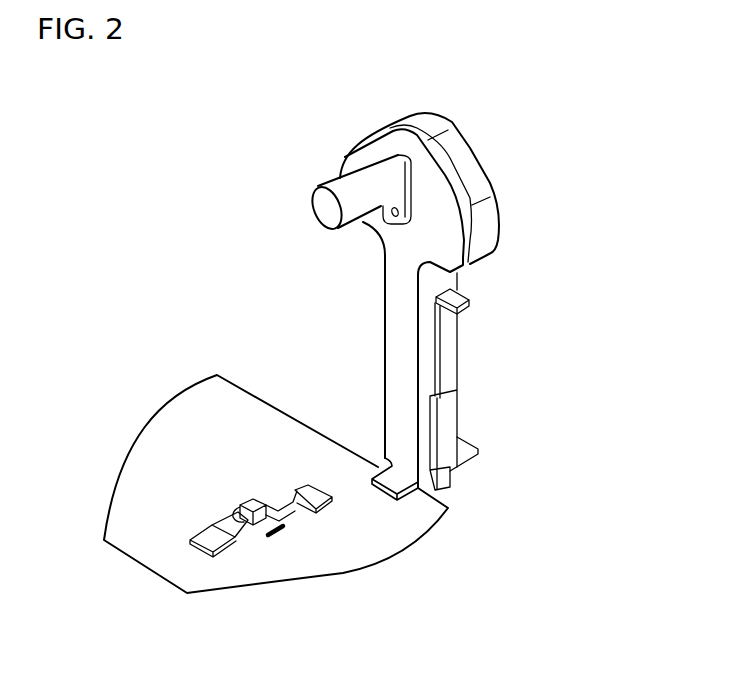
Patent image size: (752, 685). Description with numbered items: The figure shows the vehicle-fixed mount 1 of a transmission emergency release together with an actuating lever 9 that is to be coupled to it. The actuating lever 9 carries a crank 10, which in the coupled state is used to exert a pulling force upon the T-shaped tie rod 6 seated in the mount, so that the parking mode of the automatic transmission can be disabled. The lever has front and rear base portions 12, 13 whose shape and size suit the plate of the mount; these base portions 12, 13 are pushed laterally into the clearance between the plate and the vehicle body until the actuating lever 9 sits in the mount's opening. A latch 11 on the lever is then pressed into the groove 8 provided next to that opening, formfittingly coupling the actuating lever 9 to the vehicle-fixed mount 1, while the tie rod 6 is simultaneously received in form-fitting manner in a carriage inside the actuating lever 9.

The vehicle-fixed mount 1 is at (212, 479).
The tie rod 6 is at (255, 507).
The groove 8 is at (280, 537).
The actuating lever 9 is at (402, 302).
The crank 10 is at (310, 206).
The latch 11 is at (447, 342).
The front base portion 12 is at (395, 474).
The rear base portion 13 is at (467, 448).